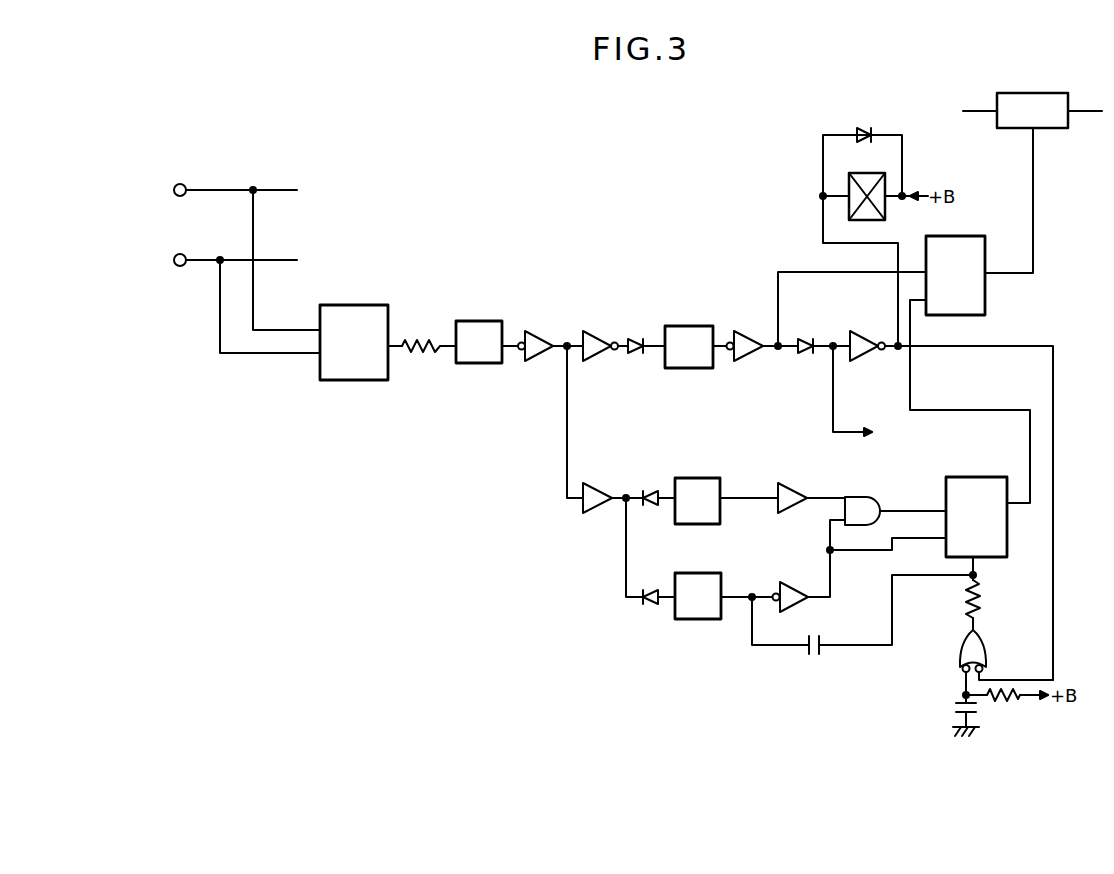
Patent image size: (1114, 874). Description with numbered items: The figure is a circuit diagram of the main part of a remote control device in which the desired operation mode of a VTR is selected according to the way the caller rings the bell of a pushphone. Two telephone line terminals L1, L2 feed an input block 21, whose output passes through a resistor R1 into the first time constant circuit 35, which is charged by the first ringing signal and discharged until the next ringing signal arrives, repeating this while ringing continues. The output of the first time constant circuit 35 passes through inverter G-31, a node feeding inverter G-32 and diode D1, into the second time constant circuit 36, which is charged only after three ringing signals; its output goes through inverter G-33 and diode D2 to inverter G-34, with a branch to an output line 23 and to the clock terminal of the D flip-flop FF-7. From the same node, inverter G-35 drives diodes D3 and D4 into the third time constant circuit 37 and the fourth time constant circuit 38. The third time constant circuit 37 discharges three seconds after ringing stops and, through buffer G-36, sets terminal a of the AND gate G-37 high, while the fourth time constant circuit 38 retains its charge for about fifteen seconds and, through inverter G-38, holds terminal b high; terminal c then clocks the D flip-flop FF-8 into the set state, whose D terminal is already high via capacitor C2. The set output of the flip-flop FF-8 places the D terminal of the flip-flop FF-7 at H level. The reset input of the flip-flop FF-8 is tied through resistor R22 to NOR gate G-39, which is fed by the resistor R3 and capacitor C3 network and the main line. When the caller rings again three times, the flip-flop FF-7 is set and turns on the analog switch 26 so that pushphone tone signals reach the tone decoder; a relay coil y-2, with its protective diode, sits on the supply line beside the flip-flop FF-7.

The input circuit block 21 is at (350, 305).
The first time constant circuit 35 is at (476, 321).
The second time constant circuit 36 is at (684, 326).
The third time constant circuit 37 is at (697, 478).
The fourth time constant circuit 38 is at (702, 620).
The output line 23 is at (867, 395).
The analog switch 26 is at (1011, 130).
The line terminal L1 is at (234, 179).
The line terminal L2 is at (234, 249).
The resistor R1 is at (422, 355).
The resistor R22 is at (992, 605).
The resistor R3 is at (1007, 708).
The capacitor C2 is at (862, 624).
The capacitor C3 is at (953, 716).
The diode D1 is at (635, 358).
The diode D2 is at (804, 333).
The diode D3 is at (652, 486).
The diode D4 is at (652, 585).
The inverter G-31 is at (540, 330).
The inverter gate G-32 is at (600, 330).
The inverter G-33 is at (750, 330).
The inverter gate G-34 is at (864, 330).
The inverter G-35 is at (599, 486).
The buffer G-36 is at (794, 486).
The AND gate G-37 is at (861, 505).
The inverter gate G-38 is at (795, 586).
The NOR gate G-39 is at (996, 651).
The D flip-flop FF-7 is at (955, 263).
The D flip-flop FF-8 is at (976, 506).
The relay coil y-2 is at (867, 185).